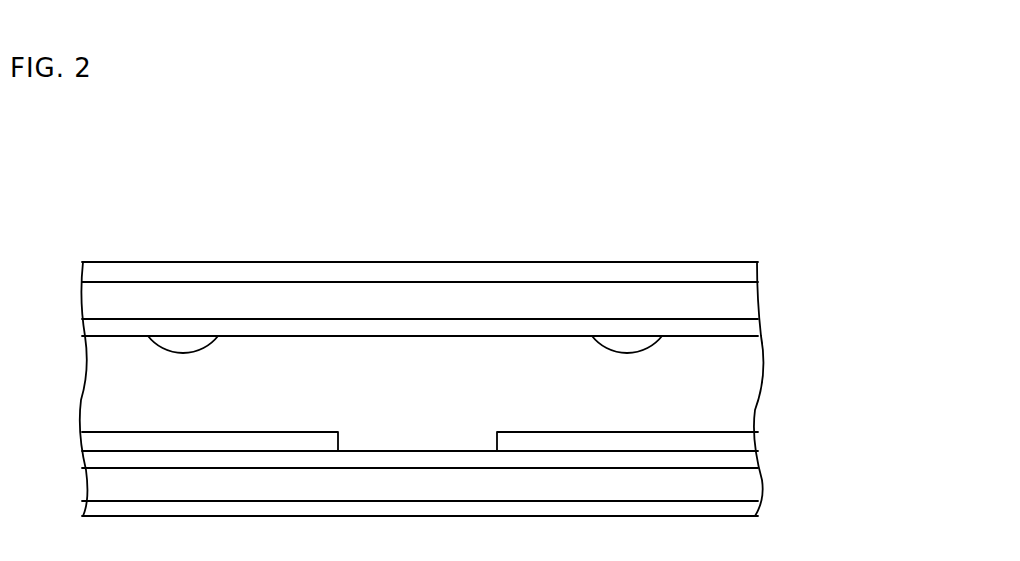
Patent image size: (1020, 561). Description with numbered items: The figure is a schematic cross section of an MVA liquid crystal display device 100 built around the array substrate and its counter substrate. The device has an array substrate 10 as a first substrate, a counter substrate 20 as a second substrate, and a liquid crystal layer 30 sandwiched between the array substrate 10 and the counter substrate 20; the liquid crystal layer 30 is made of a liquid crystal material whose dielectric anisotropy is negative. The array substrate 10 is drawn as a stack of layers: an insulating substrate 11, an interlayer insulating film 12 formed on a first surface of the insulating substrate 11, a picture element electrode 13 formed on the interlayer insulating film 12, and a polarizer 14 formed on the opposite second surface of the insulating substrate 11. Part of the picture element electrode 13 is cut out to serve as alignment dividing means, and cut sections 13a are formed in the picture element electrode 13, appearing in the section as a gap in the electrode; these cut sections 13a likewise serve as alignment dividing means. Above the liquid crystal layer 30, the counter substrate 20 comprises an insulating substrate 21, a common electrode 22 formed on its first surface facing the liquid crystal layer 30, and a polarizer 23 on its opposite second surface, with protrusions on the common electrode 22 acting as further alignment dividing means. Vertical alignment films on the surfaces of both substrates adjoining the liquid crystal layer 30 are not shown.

The liquid crystal display device 100 is at (746, 216).
The counter substrate 20 is at (470, 305).
The polarizer 23 is at (752, 273).
The insulating substrate 21 is at (752, 303).
The common electrode 22 is at (447, 337).
The liquid crystal layer 30 is at (752, 393).
The array substrate 10 is at (470, 442).
The picture element electrode 13 is at (752, 433).
The cut sections 13a is at (340, 442).
The interlayer insulating film 12 is at (752, 462).
The insulating substrate 11 is at (447, 490).
The polarizer 14 is at (752, 515).